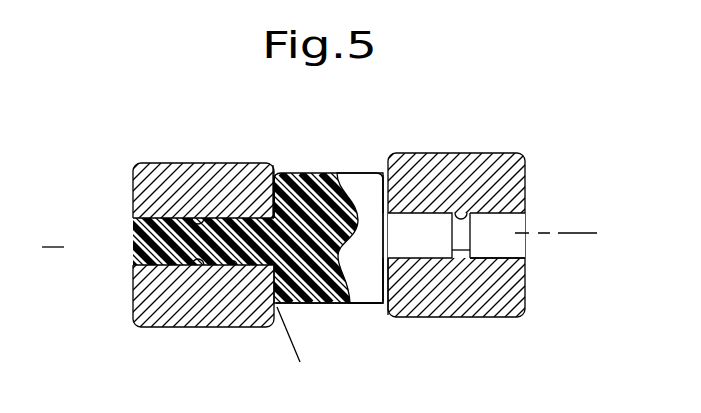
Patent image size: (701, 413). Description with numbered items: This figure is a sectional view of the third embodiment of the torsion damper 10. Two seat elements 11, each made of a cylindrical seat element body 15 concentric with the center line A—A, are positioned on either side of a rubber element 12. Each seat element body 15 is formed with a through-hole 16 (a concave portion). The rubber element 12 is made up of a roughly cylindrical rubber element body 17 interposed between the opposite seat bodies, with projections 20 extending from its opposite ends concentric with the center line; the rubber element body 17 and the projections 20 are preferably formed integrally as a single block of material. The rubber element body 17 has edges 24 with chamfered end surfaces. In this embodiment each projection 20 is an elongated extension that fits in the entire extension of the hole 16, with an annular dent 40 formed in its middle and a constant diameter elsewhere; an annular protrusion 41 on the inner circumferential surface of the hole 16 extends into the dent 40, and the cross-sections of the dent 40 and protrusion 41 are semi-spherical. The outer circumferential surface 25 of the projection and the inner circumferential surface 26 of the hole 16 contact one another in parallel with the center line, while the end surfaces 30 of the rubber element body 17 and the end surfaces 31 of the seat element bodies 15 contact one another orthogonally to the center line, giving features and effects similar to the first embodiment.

The torsion damper 10 is at (340, 235).
The seat element 11 is at (131, 162).
The rubber element 12 is at (281, 191).
The seat element body 15 is at (155, 308).
The through-hole 16 is at (517, 258).
The rubber element body 17 is at (313, 298).
The projection 20 is at (487, 229).
The edge 24 is at (381, 172).
The outer circumferential surface 25 is at (230, 213).
The inner circumferential surface 26 is at (407, 257).
The end surface 30 is at (248, 163).
The end surface 31 is at (293, 175).
The annular dent 40 is at (190, 262).
The annular protrusion 41 is at (460, 250).